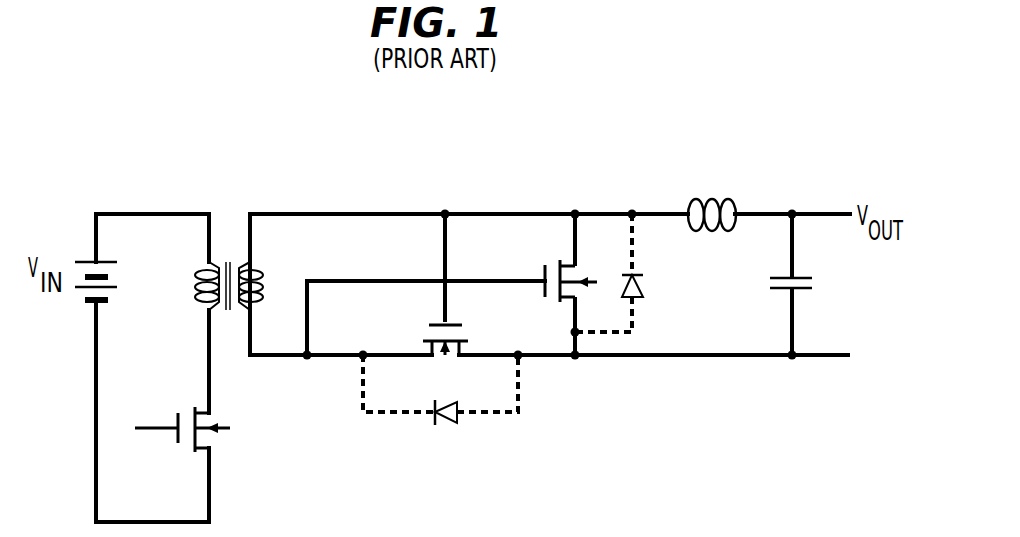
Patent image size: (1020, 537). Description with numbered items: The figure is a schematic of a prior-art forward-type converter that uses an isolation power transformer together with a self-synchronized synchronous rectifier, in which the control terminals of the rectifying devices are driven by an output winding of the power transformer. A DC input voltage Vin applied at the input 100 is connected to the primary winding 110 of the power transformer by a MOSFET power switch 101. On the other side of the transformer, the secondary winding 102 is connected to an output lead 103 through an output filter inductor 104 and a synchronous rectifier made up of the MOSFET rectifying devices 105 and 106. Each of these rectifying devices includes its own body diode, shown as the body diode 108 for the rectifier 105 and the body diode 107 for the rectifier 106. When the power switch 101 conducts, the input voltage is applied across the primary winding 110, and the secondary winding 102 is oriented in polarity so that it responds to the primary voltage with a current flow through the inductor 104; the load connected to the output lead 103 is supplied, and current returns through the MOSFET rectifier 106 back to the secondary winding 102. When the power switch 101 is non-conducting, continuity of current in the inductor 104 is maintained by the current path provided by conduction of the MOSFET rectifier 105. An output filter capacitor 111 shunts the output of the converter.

The input 100 is at (83, 262).
The MOSFET power switch 101 is at (228, 428).
The secondary winding 102 is at (272, 285).
The output lead 103 is at (792, 212).
The output filter inductor 104 is at (708, 198).
The MOSFET rectifying device 105 is at (538, 272).
The MOSFET rectifying device 106 is at (445, 359).
The body diode 107 is at (447, 424).
The body diode 108 is at (643, 287).
The primary winding 110 is at (193, 287).
The output filter capacitor 111 is at (805, 290).